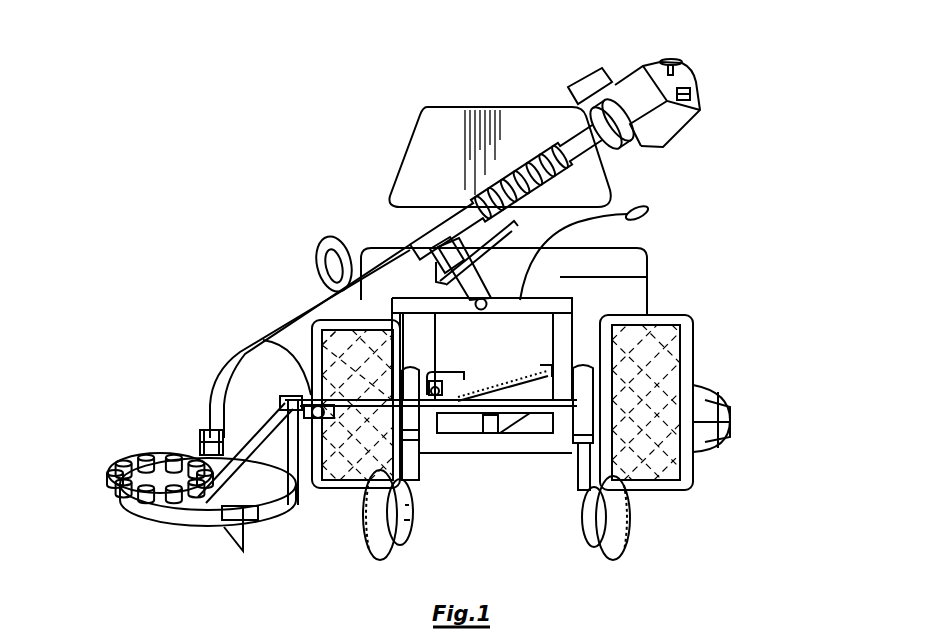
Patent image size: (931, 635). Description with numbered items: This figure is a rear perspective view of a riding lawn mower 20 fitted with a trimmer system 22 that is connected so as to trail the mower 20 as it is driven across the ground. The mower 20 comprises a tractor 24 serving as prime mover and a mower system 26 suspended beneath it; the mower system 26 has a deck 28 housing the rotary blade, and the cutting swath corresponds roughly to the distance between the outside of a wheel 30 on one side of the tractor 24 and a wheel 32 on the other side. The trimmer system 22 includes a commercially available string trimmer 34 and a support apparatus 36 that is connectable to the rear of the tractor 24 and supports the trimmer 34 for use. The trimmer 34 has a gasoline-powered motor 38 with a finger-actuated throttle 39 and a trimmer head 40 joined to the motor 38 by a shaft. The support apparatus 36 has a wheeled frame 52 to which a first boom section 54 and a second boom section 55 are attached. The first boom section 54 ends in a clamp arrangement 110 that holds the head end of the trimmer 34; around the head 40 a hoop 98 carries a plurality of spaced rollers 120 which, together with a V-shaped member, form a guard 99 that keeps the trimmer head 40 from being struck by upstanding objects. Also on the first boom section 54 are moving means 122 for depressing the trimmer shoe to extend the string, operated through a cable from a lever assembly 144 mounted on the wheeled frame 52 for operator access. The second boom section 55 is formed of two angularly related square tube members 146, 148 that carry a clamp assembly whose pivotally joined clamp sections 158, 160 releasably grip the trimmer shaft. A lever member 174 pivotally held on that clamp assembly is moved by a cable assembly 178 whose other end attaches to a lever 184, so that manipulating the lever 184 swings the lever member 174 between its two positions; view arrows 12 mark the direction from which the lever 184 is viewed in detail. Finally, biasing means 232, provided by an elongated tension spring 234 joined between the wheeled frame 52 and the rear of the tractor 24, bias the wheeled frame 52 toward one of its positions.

The section line for FIG. 12 is at (313, 203).
The riding lawn mower 20 is at (707, 200).
The trimmer system 22 is at (170, 494).
The tractor 24 is at (383, 245).
The mower system 26 is at (713, 404).
The deck 28 is at (731, 422).
The wheel 30 is at (311, 313).
The wheel 32 is at (673, 322).
The string trimmer 34 is at (235, 366).
The support apparatus 36 is at (500, 496).
The gasoline-powered motor 38 is at (627, 65).
The finger-actuated throttle 39 is at (550, 196).
The trimmer head 40 is at (291, 492).
The wheeled frame 52 is at (420, 481).
The first boom section 54 is at (290, 400).
The second boom section 55 is at (452, 309).
The hoop 98 is at (248, 540).
The guard 99 is at (148, 522).
The clamp arrangement 110 is at (192, 447).
The rollers 120 is at (112, 485).
The moving means 122 is at (213, 543).
The lever assembly 144 is at (266, 342).
The tube member 146 is at (338, 297).
The tube member 148 is at (472, 288).
The clamp section 158 is at (438, 280).
The clamp section 160 is at (429, 220).
The lever member 174 is at (497, 233).
The cable assembly 178 is at (558, 252).
The lever 184 is at (648, 208).
The biasing means 232 is at (523, 366).
The tension spring 234 is at (487, 389).